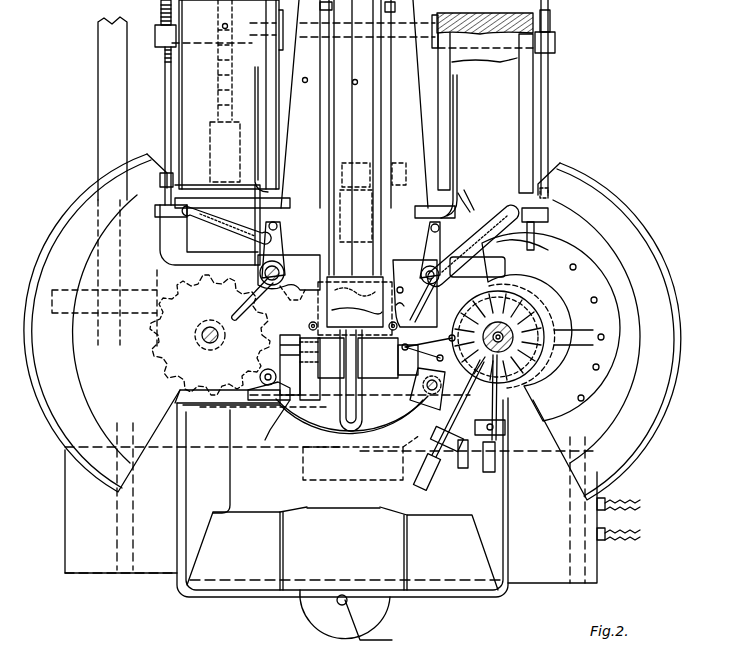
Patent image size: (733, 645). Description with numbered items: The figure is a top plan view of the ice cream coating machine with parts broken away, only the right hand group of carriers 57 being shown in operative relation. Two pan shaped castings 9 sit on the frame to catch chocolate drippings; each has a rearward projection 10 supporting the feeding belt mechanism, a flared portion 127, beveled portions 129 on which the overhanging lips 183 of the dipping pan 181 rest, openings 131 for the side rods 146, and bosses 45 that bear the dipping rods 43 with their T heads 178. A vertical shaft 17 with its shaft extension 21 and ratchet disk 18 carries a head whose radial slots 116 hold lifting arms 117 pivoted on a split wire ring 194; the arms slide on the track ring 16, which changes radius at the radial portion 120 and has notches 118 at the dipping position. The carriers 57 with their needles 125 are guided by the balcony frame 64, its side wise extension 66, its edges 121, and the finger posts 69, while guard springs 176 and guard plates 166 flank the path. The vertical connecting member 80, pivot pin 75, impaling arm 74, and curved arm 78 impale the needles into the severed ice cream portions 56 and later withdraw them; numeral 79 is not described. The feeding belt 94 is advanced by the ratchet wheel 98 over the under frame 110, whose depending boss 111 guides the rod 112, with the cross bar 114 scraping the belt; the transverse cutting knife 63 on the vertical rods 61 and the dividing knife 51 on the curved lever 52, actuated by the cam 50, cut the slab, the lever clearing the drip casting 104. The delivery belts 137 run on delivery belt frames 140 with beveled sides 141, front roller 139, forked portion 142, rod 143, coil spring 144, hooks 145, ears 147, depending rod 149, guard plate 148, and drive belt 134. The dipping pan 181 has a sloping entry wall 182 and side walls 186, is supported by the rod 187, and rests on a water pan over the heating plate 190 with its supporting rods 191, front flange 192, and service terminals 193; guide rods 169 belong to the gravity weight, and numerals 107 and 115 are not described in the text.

The pan shaped casting 9 is at (100, 253).
The rearward projection 10 is at (320, 165).
The track ring 16 is at (590, 326).
The vertical shaft 17 is at (514, 333).
The ratchet disk 18 is at (165, 373).
The shaft extension 21 is at (545, 360).
The vertically movable rod 43 is at (346, 389).
The boss 45 is at (260, 370).
The cam 50 is at (490, 474).
The dividing knife 51 is at (353, 372).
The curved lever 52 is at (345, 400).
The ice cream portion 56 is at (425, 492).
The carrier 57 is at (602, 340).
The vertical rod 61 is at (310, 324).
The transverse cutting knife 63 is at (357, 298).
The balcony frame 64 is at (348, 280).
The side wise extension 66 is at (210, 222).
The finger post 69 is at (278, 226).
The impaling arm 74 is at (250, 296).
The pivot pin 75 is at (289, 277).
The curved arm 78 is at (462, 228).
The hook 79 is at (456, 200).
The vertical connecting member 80 is at (283, 268).
The feeding belt 94 is at (293, 410).
The ratchet wheel 98 is at (280, 342).
The drip casting 104 is at (300, 432).
The column 107 is at (326, 145).
The under frame 110 is at (370, 138).
The depending boss 111 is at (376, 178).
The guide rod 112 is at (352, 155).
The cross bar 114 is at (350, 72).
The member 115 is at (424, 5).
The radial slot 116 is at (512, 330).
The lifting arm 117 is at (465, 434).
The notch 118 is at (402, 455).
The radial portion of track 120 is at (477, 267).
The edge 121 is at (255, 320).
The needle 125 is at (506, 440).
The flared portion 127 is at (668, 394).
The beveled portion 129 is at (215, 404).
The opening 131 is at (162, 186).
The belt 134 is at (98, 88).
The delivery belt 137 is at (497, 62).
The front roller 139 is at (210, 227).
The delivery belt frame 140 is at (182, 80).
The upwardly beveled side 141 is at (178, 118).
The movable forked portion 142 is at (563, 240).
The rod 143 is at (222, 108).
The coil spring 144 is at (222, 78).
The hook 145 is at (158, 211).
The side rod 146 is at (165, 142).
The ear 147 is at (555, 42).
The guard plate 148 is at (259, 134).
The depending rod 149 is at (288, 28).
The guard plate 166 is at (402, 290).
The guide rod 169 is at (400, 308).
The guard spring 176 is at (428, 344).
The T head 178 is at (367, 406).
The dipping pan 181 is at (178, 522).
The sloping entry wall 182 is at (345, 549).
The overhanging lip 183 is at (236, 407).
The horizontal side wall 186 is at (280, 552).
The rod 187 is at (337, 603).
The electric heating plate 190 is at (68, 553).
The supporting rod 191 is at (117, 528).
The front flange 192 is at (88, 575).
The service terminal 193 is at (607, 520).
The split wire ring 194 is at (520, 300).